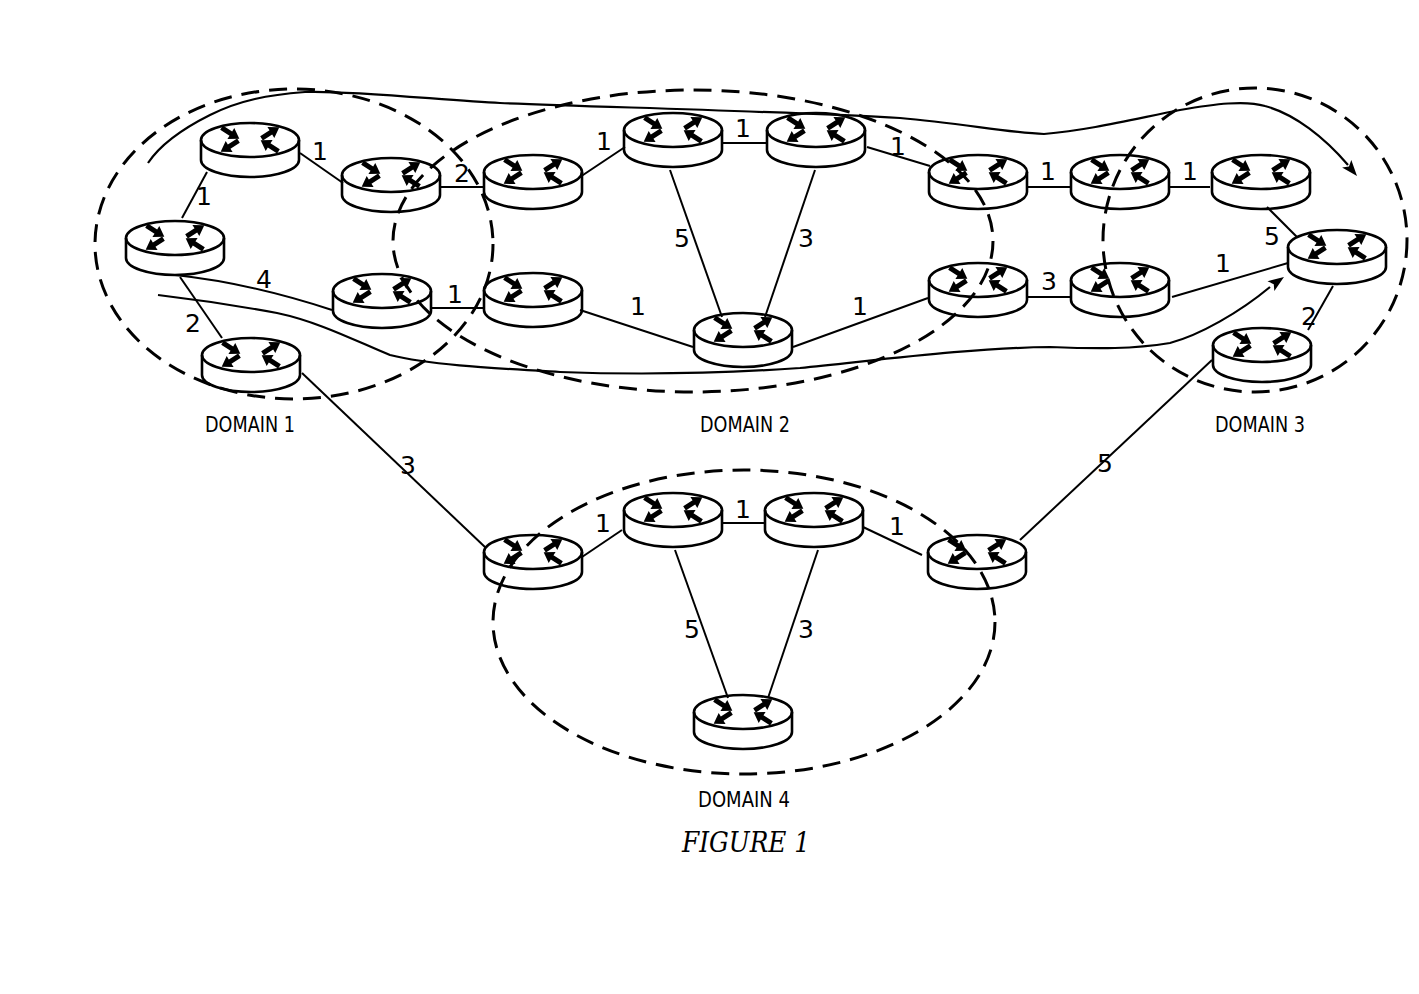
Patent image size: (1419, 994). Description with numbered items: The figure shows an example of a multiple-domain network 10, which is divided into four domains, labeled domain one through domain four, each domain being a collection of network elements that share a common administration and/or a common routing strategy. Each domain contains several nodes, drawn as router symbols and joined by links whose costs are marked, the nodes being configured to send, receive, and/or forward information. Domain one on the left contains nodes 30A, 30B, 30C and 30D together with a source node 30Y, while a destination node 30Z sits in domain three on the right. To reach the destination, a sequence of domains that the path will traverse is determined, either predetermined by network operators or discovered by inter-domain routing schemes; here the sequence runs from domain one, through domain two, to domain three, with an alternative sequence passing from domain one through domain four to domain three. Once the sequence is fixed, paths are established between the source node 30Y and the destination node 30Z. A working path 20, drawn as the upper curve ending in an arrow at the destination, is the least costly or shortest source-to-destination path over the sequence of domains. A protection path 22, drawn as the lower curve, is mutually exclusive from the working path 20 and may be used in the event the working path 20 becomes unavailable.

The multiple-domain network 10 is at (1290, 53).
The working path 20 is at (1044, 134).
The protection path 22 is at (1045, 348).
The source node 30Y is at (152, 222).
The node 30C is at (252, 178).
The node 30D is at (422, 207).
The node 30A is at (204, 363).
The node 30B is at (405, 326).
The destination node 30Z is at (1338, 230).